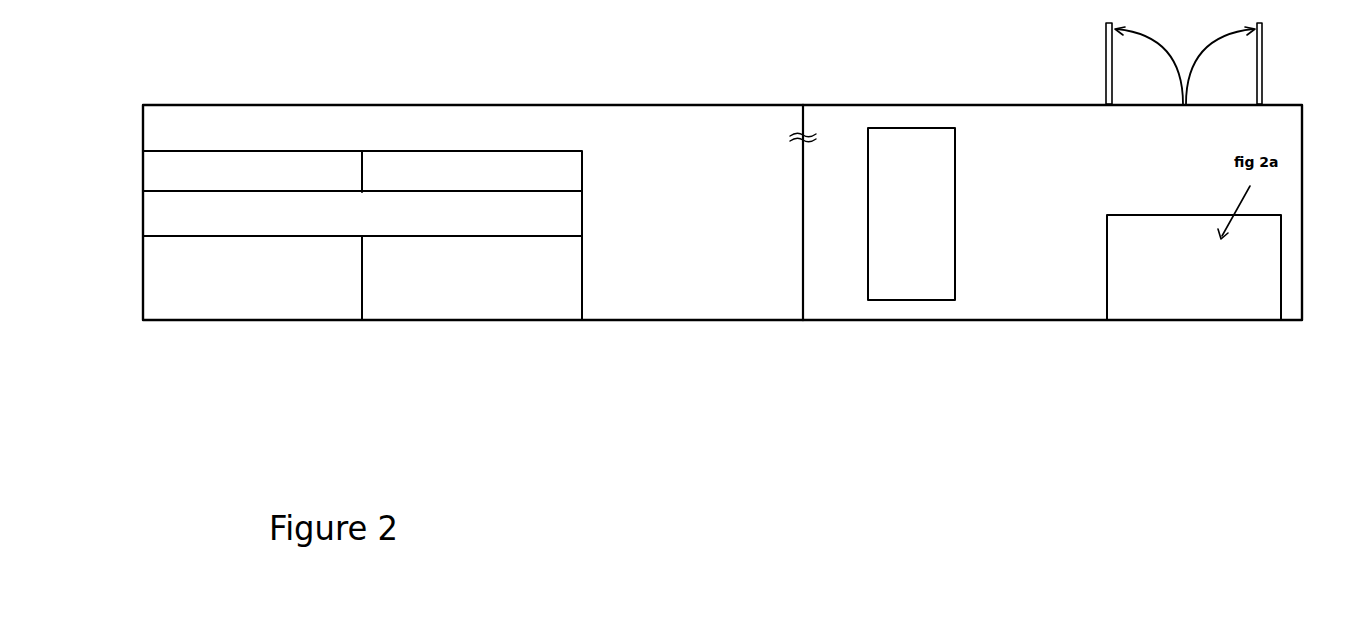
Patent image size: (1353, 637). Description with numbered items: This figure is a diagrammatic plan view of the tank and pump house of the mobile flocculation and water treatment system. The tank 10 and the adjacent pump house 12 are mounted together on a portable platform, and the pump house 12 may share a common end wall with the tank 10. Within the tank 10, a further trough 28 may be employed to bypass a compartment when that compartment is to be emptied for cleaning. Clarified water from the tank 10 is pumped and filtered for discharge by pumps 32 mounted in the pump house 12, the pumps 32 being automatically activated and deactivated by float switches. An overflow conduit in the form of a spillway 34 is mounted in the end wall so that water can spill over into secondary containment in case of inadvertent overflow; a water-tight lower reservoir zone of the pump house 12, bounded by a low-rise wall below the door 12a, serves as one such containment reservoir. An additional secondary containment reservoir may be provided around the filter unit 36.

The tank 10 is at (616, 322).
The pump house 12 is at (1005, 322).
The door 12a is at (1097, 49).
The trough 28 is at (484, 117).
The pumps 32 is at (1125, 228).
The spillway 34 is at (806, 137).
The filter unit 36 is at (923, 147).